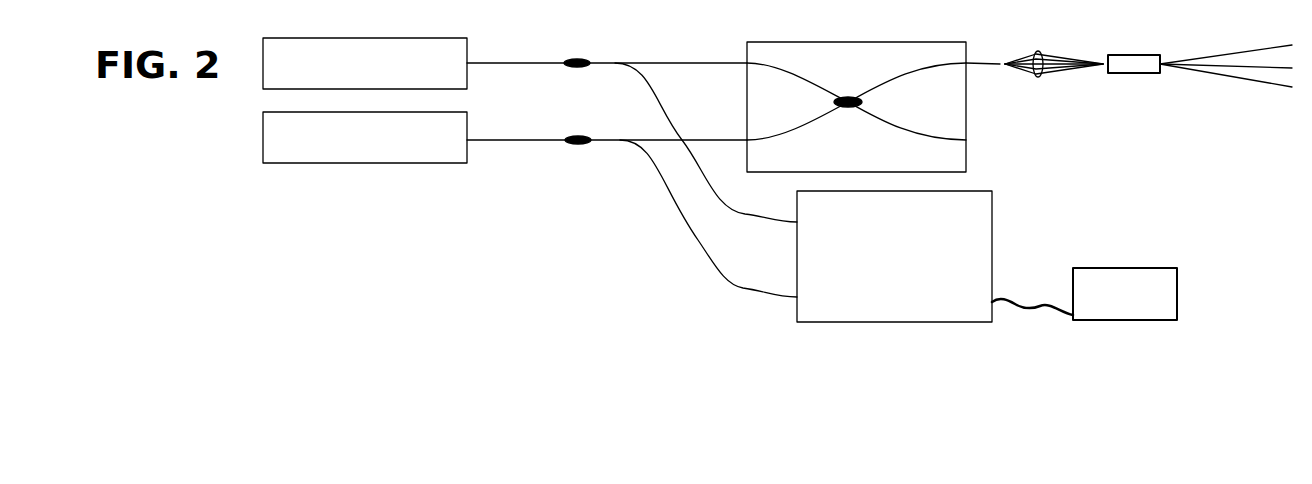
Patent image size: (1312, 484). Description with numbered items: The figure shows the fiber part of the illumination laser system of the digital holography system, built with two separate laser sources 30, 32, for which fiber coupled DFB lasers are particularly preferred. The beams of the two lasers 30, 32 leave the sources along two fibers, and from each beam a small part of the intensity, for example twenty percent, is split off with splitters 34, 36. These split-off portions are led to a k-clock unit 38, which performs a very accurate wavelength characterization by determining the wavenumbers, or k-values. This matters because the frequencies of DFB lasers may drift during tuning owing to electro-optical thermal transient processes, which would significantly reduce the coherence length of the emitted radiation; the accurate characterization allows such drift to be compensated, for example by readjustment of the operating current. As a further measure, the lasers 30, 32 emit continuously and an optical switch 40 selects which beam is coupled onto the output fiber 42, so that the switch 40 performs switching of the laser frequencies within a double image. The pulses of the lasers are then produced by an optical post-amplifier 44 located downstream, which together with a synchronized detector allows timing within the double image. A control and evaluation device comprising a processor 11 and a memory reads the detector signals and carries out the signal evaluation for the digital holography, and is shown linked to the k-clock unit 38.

The processor 11 is at (1168, 290).
The laser source 30 is at (453, 52).
The laser source 32 is at (393, 152).
The splitter 34 is at (575, 60).
The splitter 36 is at (578, 143).
The k-clock unit 38 is at (908, 275).
The optical switch 40 is at (840, 42).
The output fiber 42 is at (988, 66).
The optical post-amplifier 44 is at (1135, 67).